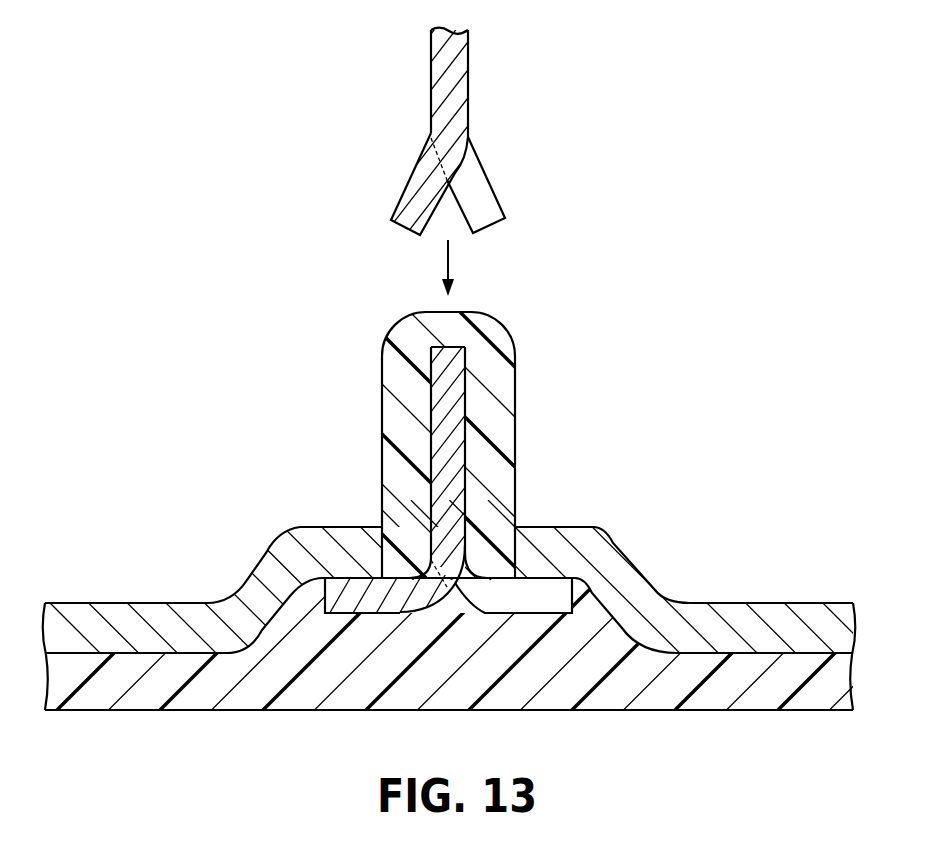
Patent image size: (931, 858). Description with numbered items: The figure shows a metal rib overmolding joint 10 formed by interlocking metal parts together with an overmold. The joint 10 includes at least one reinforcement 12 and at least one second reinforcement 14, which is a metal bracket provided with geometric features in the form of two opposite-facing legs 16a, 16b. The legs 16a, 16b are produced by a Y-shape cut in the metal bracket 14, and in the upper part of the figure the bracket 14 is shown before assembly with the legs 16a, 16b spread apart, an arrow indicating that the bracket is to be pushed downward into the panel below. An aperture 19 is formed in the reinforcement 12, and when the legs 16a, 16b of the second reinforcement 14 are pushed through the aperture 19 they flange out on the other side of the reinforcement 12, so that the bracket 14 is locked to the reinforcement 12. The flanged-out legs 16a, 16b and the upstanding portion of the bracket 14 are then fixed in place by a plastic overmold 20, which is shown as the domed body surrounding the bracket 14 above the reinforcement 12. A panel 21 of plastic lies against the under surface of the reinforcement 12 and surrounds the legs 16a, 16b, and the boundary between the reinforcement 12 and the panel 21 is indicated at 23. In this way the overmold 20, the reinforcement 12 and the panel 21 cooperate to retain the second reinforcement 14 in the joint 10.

The metal rib overmolding joint 10 is at (222, 458).
The reinforcement 12 is at (730, 623).
The second reinforcement 14 is at (467, 70).
The leg 16a is at (407, 195).
The leg 16b is at (495, 203).
The aperture 19 is at (508, 562).
The plastic overmold 20 is at (407, 535).
The panel 21 is at (238, 697).
The skin layer 23 is at (167, 655).